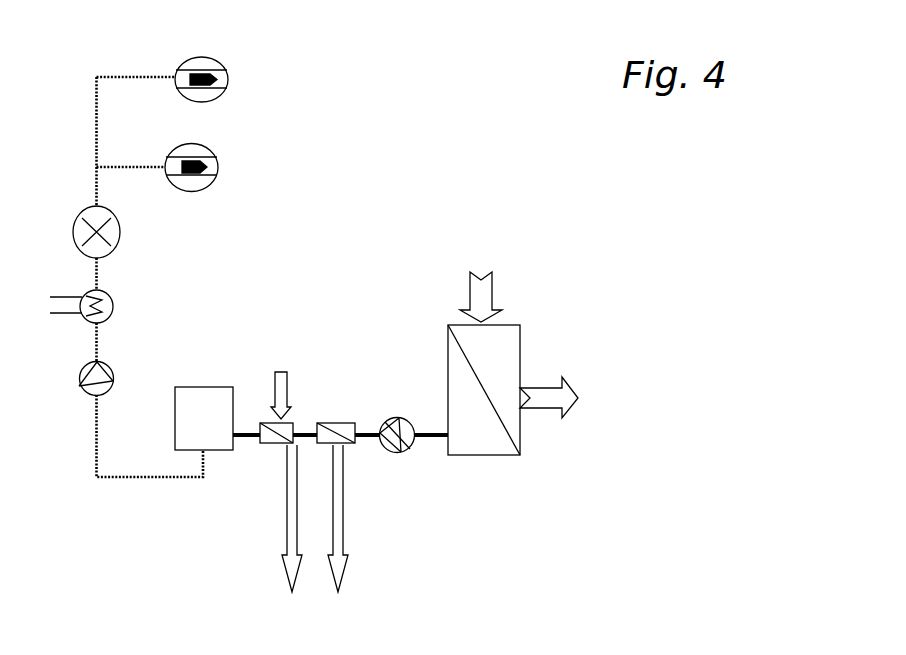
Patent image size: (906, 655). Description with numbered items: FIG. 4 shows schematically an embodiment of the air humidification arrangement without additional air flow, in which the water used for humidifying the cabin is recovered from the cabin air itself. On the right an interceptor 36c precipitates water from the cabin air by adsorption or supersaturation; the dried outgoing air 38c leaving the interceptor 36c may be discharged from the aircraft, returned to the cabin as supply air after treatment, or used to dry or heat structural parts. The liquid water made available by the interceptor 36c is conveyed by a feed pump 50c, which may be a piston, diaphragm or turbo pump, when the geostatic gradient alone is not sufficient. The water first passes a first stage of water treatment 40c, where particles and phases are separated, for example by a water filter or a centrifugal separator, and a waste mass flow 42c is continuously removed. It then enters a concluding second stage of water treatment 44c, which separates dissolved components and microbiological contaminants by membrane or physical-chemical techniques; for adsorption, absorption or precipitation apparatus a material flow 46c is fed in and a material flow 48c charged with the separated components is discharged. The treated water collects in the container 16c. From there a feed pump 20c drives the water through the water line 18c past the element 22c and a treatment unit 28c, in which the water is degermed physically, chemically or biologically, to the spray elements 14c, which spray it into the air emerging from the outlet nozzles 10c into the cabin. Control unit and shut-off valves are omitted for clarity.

The outlet nozzle 10c is at (200, 63).
The spray element 14c is at (212, 76).
The treatment unit 28c is at (120, 235).
The water line 18c is at (100, 283).
The heat exchanger 22c is at (113, 308).
The feed pump 20c is at (113, 381).
The container 16c is at (203, 387).
The second stage of water treatment 44c is at (282, 446).
The material flow 46c is at (290, 368).
The first stage of water treatment 40c is at (338, 421).
The feed pump 50c is at (398, 417).
The interceptor 36c is at (475, 455).
The dried outgoing air 38c is at (552, 410).
The material flow 48c is at (283, 540).
The waste mass flow 42c is at (350, 556).